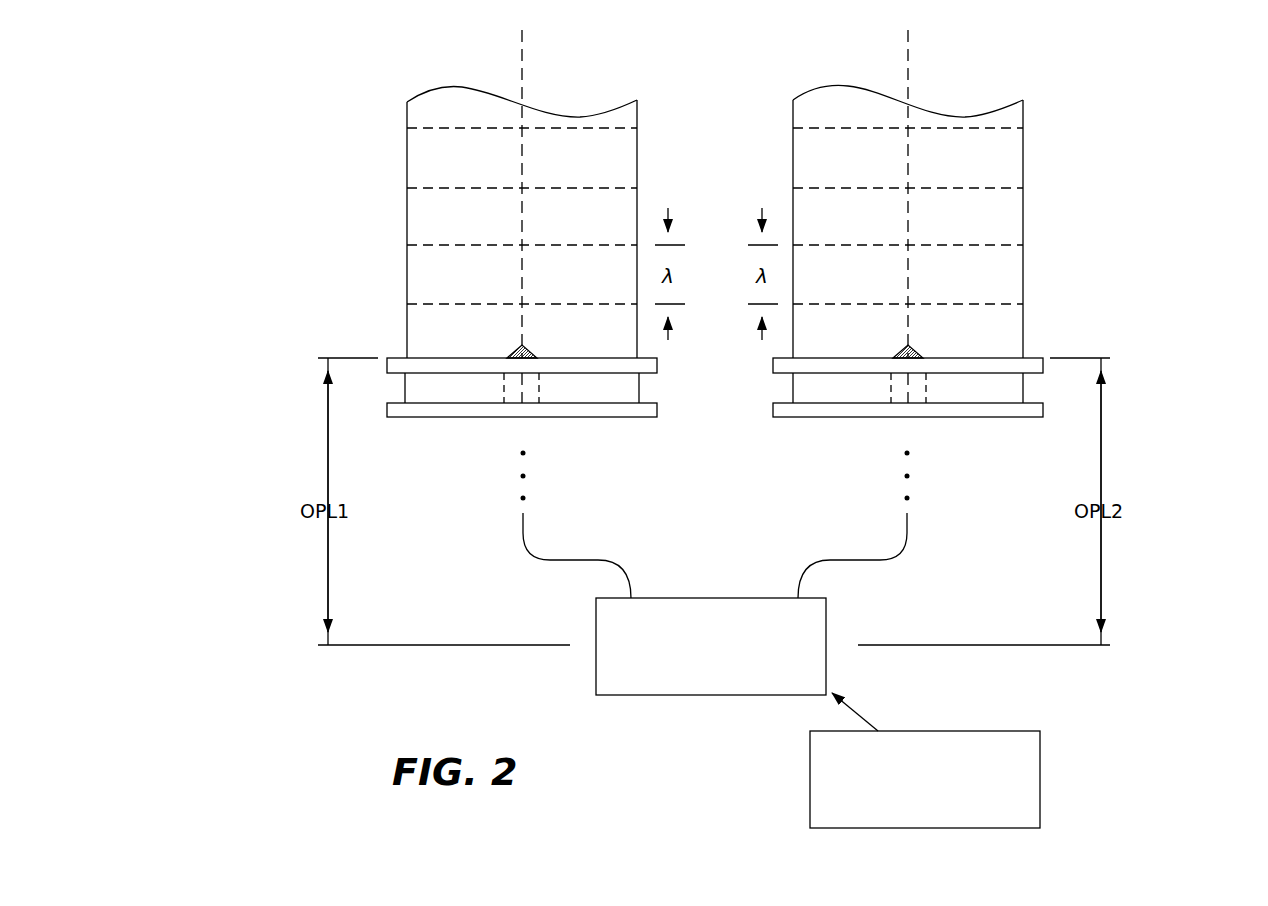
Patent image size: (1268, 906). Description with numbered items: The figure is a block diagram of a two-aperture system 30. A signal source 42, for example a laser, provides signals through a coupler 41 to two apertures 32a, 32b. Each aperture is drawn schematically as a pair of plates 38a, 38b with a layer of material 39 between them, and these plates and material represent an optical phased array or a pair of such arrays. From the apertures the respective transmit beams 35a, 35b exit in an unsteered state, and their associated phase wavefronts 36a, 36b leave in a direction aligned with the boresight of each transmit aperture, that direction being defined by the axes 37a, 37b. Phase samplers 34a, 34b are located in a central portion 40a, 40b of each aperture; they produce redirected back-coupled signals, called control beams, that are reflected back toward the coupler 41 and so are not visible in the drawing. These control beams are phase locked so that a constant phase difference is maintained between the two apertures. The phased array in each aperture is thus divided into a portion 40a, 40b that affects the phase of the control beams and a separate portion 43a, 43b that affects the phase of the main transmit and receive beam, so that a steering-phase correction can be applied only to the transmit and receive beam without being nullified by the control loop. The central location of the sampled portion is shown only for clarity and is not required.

The system 30 is at (1167, 156).
The aperture 32a is at (373, 350).
The aperture 32b is at (1058, 350).
The phase sampler 34a is at (518, 350).
The phase sampler 34b is at (912, 350).
The transmit beam 35a is at (640, 116).
The transmit beam 35b is at (791, 116).
The phase wavefronts 36a is at (438, 127).
The phase wavefronts 36b is at (992, 127).
The axis 37a is at (522, 32).
The axis 37b is at (908, 32).
The plate 38a is at (387, 366).
The plate 38b is at (395, 418).
The layer of material 39 is at (405, 388).
The central portion 40a is at (523, 393).
The central portion 40b is at (907, 393).
The coupler 41 is at (700, 671).
The signal source 42 is at (914, 801).
The portion 43a is at (466, 395).
The portion 43b is at (854, 395).